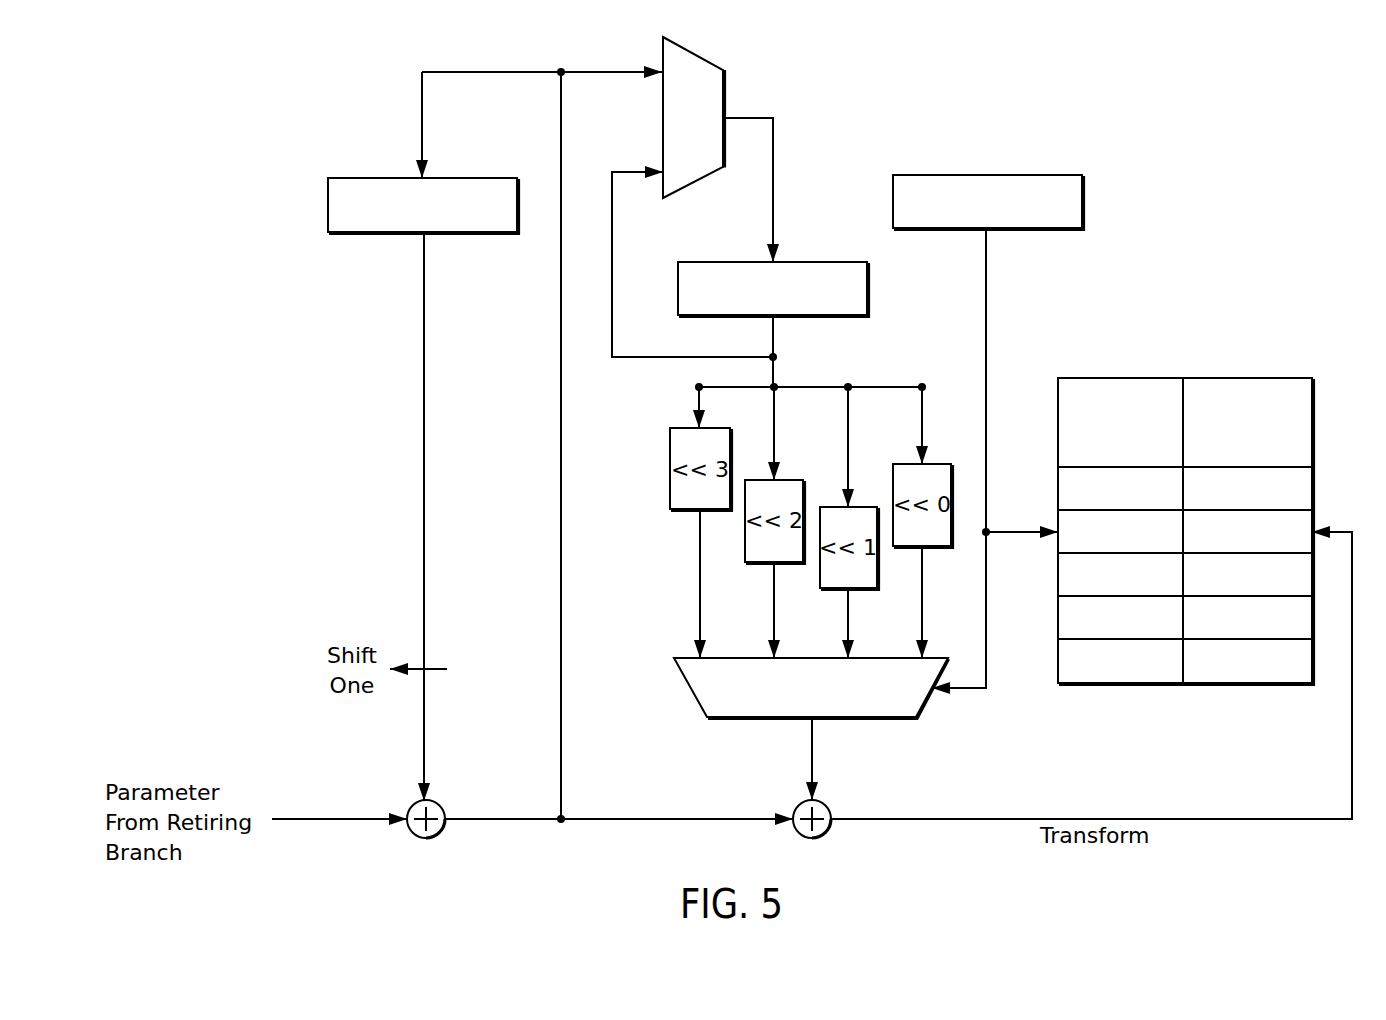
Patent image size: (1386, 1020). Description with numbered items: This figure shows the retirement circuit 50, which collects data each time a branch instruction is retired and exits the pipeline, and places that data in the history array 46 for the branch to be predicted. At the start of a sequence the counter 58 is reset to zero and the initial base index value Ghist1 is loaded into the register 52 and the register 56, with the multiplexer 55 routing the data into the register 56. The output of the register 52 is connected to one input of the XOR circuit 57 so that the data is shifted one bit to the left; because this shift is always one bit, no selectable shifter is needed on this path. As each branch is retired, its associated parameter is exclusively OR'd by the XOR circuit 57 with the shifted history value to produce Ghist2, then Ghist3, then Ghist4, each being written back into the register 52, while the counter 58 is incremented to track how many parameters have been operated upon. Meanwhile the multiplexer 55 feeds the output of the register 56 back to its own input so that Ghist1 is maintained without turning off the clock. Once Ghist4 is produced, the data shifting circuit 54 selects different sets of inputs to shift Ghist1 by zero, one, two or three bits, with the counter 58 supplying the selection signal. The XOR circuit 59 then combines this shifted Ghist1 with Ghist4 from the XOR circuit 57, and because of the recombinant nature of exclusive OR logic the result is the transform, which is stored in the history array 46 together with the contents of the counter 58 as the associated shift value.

The history array 46 is at (1183, 378).
The retirement circuit 50 is at (956, 879).
The register 52 is at (370, 178).
The data shifting circuit 54 is at (693, 693).
The multiplexer 55 is at (695, 52).
The register 56 is at (868, 297).
The XOR circuit 57 is at (438, 834).
The counter 58 is at (1018, 175).
The XOR circuit 59 is at (826, 833).